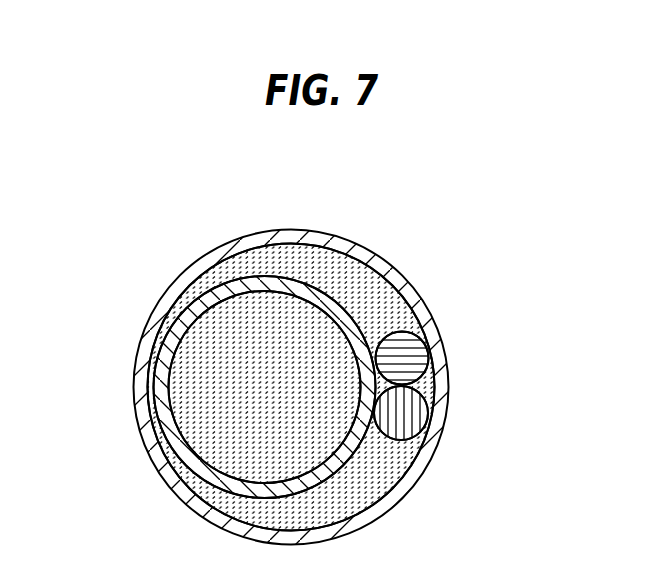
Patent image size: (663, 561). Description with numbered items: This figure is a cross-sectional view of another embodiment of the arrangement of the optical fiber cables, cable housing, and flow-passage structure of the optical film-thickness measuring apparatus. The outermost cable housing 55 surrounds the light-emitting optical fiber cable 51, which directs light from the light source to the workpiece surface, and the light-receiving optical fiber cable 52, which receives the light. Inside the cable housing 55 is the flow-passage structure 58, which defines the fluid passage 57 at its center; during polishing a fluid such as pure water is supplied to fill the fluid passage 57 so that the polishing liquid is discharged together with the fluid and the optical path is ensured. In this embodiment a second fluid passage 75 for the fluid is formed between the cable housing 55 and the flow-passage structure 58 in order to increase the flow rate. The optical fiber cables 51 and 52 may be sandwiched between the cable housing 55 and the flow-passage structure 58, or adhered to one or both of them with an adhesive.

The cable housing 55 is at (188, 268).
The second fluid passage 75 is at (382, 314).
The flow-passage structure 58 is at (320, 287).
The fluid passage 57 is at (277, 390).
The light-emitting optical fiber cable 51 is at (404, 332).
The light-receiving optical fiber cable 52 is at (405, 439).